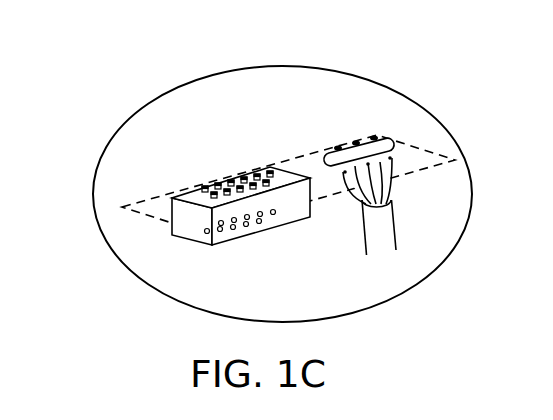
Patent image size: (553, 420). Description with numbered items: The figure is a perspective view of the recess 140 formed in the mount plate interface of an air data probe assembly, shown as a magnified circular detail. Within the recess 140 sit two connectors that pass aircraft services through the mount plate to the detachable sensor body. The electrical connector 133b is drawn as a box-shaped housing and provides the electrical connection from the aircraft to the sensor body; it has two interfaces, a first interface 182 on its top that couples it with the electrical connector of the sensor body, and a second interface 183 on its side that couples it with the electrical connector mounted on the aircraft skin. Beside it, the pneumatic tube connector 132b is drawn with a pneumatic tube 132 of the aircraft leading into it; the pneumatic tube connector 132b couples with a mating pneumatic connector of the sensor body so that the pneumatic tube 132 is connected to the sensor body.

The recess 140 is at (378, 97).
The pneumatic tube 132 is at (382, 245).
The pneumatic tube connector 132b is at (392, 143).
The electrical connector 133b is at (186, 222).
The first interface 182 is at (252, 162).
The second interface 183 is at (301, 228).